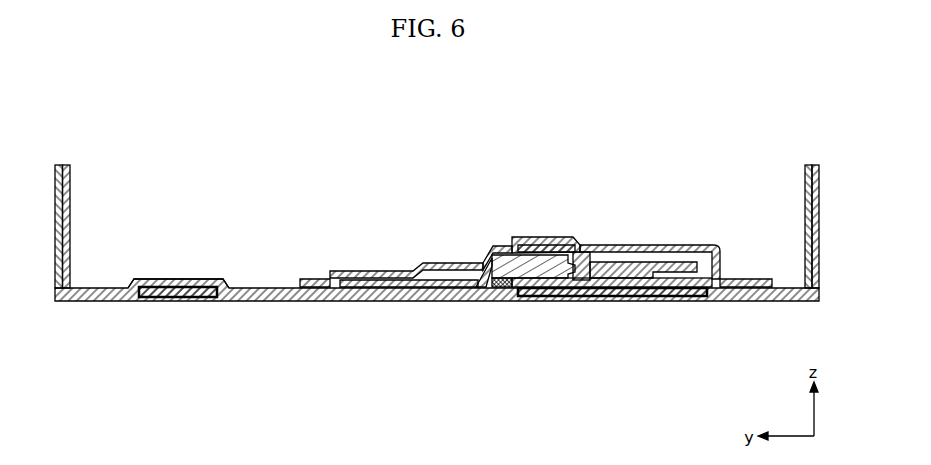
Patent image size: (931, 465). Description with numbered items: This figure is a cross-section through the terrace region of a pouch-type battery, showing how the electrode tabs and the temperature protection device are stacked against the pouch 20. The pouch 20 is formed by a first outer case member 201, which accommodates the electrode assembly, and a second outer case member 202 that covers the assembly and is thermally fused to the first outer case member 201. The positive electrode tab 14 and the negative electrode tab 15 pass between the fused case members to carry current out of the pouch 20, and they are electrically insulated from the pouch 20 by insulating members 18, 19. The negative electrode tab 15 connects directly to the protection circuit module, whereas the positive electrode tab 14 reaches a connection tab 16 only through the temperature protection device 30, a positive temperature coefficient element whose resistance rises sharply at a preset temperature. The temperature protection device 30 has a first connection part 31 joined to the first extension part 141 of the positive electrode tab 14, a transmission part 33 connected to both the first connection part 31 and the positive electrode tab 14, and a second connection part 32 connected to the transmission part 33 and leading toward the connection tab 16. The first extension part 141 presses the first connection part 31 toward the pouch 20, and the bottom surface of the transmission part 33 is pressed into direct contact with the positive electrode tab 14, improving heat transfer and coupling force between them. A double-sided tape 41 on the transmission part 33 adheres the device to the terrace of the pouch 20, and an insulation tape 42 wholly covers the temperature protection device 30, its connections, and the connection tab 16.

The positive electrode tab 14 is at (622, 300).
The first extension part 141 is at (623, 272).
The negative electrode tab 15 is at (157, 300).
The connection tab 16 is at (362, 300).
The insulating member 18 is at (577, 300).
The insulating member 19 is at (195, 302).
The pouch 20 is at (452, 191).
The first outer case member 201 is at (803, 190).
The second outer case member 202 is at (831, 204).
The temperature protection device 30 is at (556, 184).
The first connection part 31 is at (585, 244).
The second connection part 32 is at (455, 272).
The transmission part 33 is at (505, 248).
The double-sided tape 41 is at (502, 300).
The insulation tape 42 is at (669, 250).